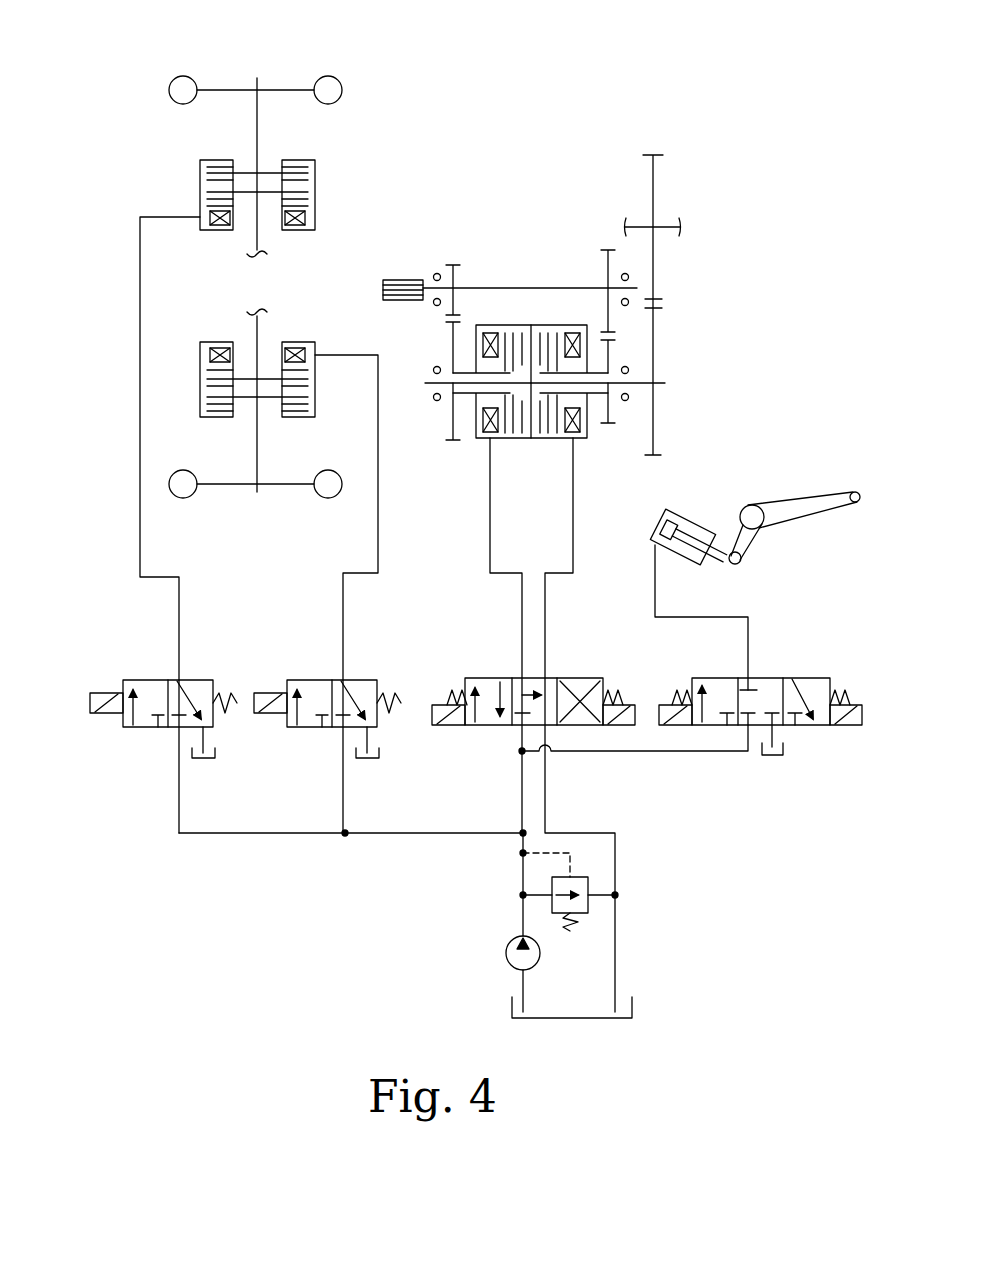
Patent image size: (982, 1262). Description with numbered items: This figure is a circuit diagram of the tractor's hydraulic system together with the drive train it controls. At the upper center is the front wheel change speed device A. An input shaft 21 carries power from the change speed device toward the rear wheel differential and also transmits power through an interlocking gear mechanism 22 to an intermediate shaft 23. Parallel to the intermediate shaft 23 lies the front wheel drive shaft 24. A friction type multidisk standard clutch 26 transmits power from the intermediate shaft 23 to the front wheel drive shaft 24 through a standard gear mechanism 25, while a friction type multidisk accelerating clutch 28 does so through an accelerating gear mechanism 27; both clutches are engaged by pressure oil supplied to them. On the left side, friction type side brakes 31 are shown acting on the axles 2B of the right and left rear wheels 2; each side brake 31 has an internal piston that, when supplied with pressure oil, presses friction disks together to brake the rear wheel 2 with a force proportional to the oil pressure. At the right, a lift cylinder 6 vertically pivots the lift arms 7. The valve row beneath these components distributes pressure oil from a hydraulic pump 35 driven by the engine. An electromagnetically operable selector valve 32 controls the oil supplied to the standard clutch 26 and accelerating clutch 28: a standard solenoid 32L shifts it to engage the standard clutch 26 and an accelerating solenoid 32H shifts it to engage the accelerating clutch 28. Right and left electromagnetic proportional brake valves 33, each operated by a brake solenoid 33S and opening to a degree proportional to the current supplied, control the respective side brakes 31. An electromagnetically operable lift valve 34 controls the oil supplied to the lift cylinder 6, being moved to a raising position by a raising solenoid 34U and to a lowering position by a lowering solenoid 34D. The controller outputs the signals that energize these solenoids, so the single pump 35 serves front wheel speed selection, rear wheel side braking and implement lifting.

The rear wheels 2 is at (228, 88).
The axles 2B is at (257, 135).
The side brakes 31 is at (200, 188).
The front wheel change speed device A is at (456, 245).
The input shaft 21 is at (638, 225).
The interlocking gear mechanism 22 is at (666, 298).
The intermediate shaft 23 is at (425, 384).
The front wheel drive shaft 24 is at (516, 286).
The standard gear mechanism 25 is at (616, 337).
The standard clutch 26 is at (590, 439).
The accelerating gear mechanism 27 is at (445, 322).
The accelerating clutch 28 is at (472, 439).
The lift cylinder 6 is at (697, 522).
The lift arms 7 is at (805, 497).
The selector valve 32 is at (492, 678).
The accelerating solenoid 32H is at (447, 725).
The standard solenoid 32L is at (614, 725).
The brake valves 33 is at (158, 680).
The brake solenoids 33S is at (98, 713).
The lift valve 34 is at (812, 678).
The raising solenoid 34U is at (676, 725).
The lowering solenoid 34D is at (840, 725).
The hydraulic pump 35 is at (506, 953).